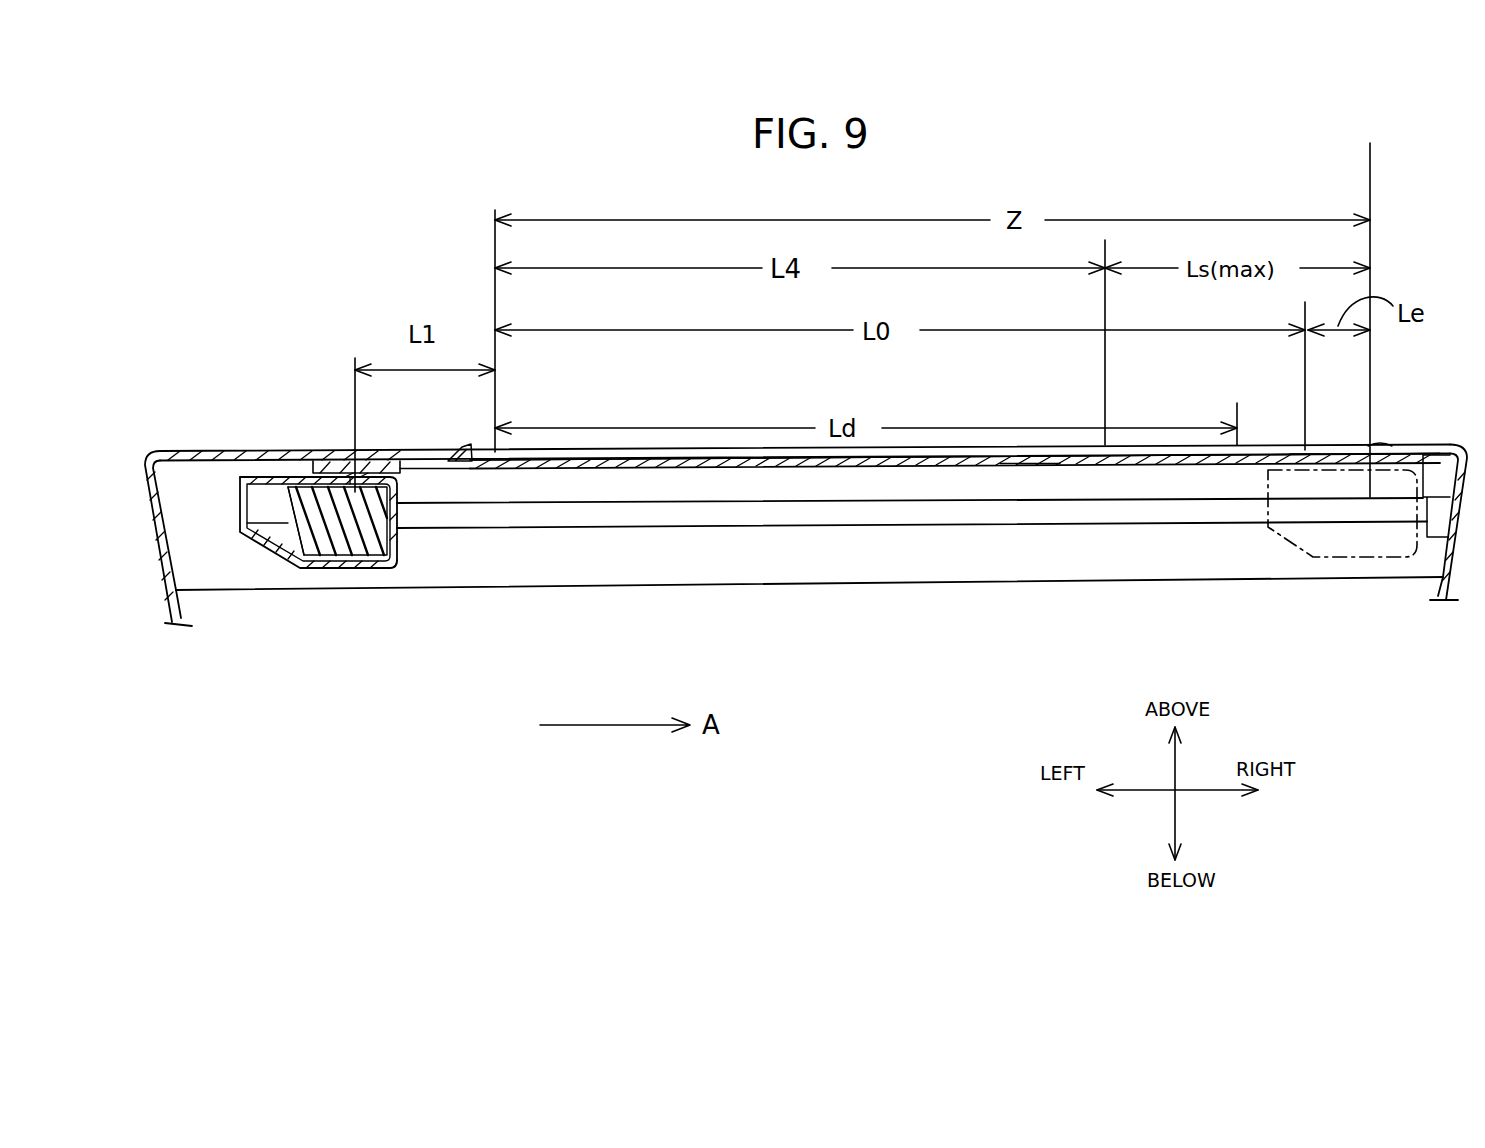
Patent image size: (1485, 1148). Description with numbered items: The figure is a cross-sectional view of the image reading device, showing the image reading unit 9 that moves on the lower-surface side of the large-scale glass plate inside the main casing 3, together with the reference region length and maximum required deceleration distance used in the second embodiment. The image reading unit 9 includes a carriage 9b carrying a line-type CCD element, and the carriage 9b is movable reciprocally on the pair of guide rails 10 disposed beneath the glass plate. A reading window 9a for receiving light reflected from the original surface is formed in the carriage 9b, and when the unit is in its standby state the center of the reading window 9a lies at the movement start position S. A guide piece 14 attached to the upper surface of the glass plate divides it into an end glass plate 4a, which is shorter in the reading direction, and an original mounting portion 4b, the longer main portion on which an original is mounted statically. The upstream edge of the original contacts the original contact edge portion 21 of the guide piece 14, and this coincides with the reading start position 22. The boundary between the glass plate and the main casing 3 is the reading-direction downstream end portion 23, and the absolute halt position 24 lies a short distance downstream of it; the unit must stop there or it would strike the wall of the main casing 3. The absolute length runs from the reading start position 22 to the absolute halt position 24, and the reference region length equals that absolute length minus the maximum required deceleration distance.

The main casing 3 is at (146, 492).
The image reading unit 9 is at (355, 585).
The reading window 9a is at (357, 492).
The carriage 9b is at (391, 569).
The end glass plate 4a is at (428, 469).
The original mounting portion 4b is at (1028, 448).
The guide rails 10 is at (860, 518).
The guide piece 14 is at (478, 462).
The original contact edge portion 21 is at (515, 465).
The reading start position 22 is at (955, 457).
The reading-direction downstream end portion 23 is at (1300, 447).
The absolute halt position 24 is at (1377, 441).
The movement start position S is at (353, 474).